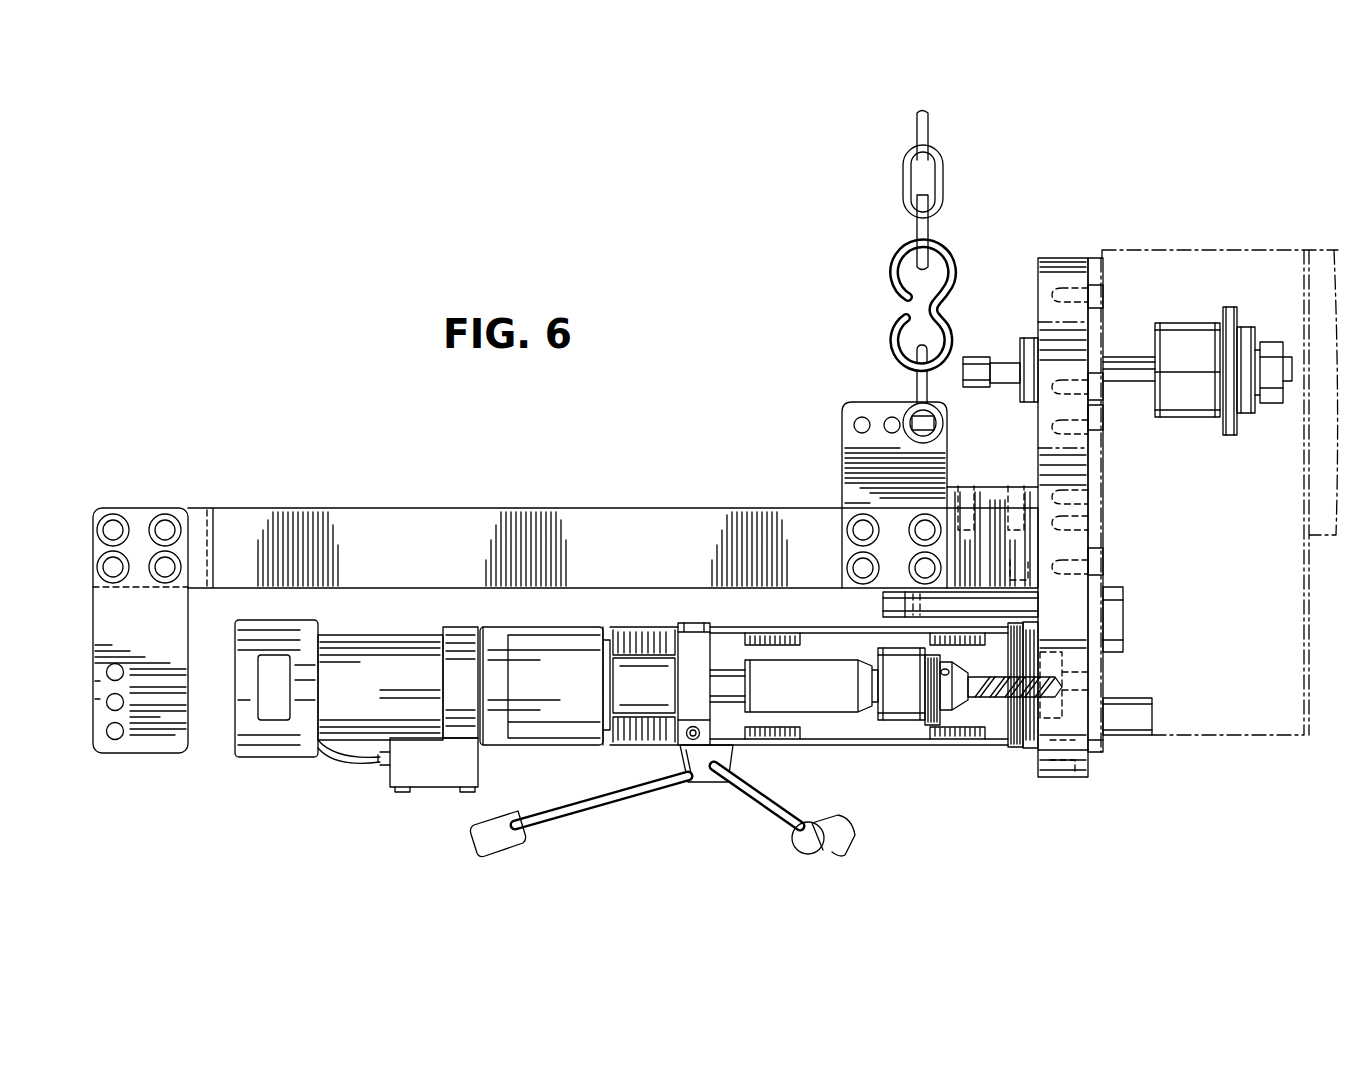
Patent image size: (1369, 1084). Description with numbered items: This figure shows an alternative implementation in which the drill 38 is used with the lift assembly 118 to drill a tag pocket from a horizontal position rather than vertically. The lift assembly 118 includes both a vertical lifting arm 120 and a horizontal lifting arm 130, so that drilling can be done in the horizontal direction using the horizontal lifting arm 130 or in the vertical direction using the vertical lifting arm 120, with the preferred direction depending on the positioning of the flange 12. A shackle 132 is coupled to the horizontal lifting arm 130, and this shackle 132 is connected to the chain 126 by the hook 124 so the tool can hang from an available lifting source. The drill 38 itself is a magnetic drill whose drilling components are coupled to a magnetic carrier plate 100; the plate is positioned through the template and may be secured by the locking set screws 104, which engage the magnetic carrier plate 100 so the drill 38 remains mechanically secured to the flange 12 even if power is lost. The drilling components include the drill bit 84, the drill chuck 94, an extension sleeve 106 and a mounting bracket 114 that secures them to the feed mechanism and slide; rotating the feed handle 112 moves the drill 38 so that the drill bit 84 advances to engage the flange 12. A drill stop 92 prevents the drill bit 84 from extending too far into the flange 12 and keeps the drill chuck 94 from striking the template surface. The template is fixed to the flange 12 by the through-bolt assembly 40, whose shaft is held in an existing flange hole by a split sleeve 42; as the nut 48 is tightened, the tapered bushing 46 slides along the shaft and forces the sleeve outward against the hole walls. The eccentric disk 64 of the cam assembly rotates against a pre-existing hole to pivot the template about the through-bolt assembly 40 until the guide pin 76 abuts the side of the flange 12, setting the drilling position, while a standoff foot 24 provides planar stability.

The flange 12 is at (1300, 680).
The standoff screw or foot 24 is at (1101, 293).
The drill 38 is at (708, 796).
The through-bolt assembly 40 is at (1000, 348).
The split sleeve 42 is at (1190, 425).
The tapered bushing 46 is at (1238, 325).
The nut 48 is at (1270, 345).
The eccentric disk 64 is at (1123, 630).
The guide pin 76 is at (1140, 744).
The drill bit 84 is at (993, 699).
The drill stop 92 is at (930, 726).
The drill chuck 94 is at (900, 722).
The magnetic carrier plate 100 is at (1096, 754).
The locking set screws 104 is at (1065, 779).
The extension sleeve 106 is at (797, 663).
The feed handle 112 is at (497, 843).
The mounting bracket 114 is at (697, 630).
The lift assembly 118 is at (325, 507).
The vertical lifting arm 120 is at (112, 705).
The hook 124 is at (898, 270).
The chain 126 is at (942, 183).
The horizontal lifting arm 130 is at (842, 472).
The shackle 132 is at (915, 388).